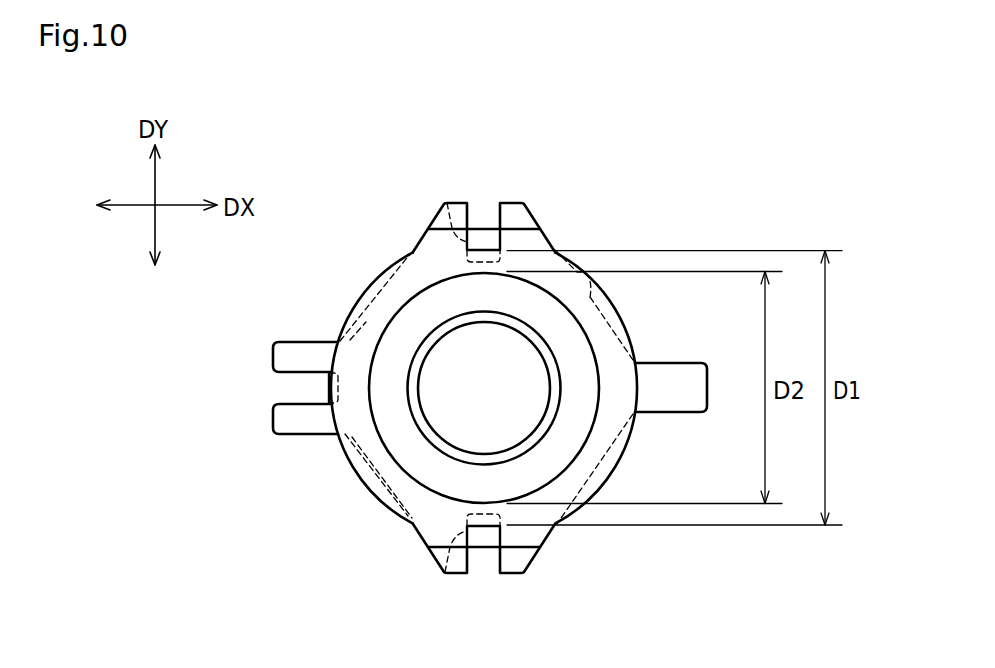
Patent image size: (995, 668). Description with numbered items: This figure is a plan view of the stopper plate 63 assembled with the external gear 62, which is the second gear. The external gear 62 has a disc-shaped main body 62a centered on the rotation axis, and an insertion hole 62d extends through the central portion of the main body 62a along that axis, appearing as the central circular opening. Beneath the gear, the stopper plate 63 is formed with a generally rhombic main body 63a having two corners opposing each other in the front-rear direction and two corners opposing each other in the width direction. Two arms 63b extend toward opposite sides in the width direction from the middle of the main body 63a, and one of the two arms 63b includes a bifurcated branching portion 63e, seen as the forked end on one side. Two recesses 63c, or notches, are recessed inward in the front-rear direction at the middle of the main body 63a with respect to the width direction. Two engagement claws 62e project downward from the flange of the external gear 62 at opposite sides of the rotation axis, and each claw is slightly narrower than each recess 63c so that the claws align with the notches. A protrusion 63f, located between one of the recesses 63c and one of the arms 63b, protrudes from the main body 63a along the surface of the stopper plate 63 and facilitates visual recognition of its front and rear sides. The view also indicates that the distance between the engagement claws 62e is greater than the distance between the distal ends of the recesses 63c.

The external gear 62 is at (393, 266).
The main body 62a is at (378, 268).
The insertion hole 62d is at (440, 343).
The engagement claw 62e is at (447, 203).
The stopper plate 63 is at (377, 470).
The main body 63a is at (378, 478).
The arm 63b is at (300, 401).
The recess 63c is at (483, 272).
The branching portion 63e is at (328, 388).
The protrusion 63f is at (597, 283).